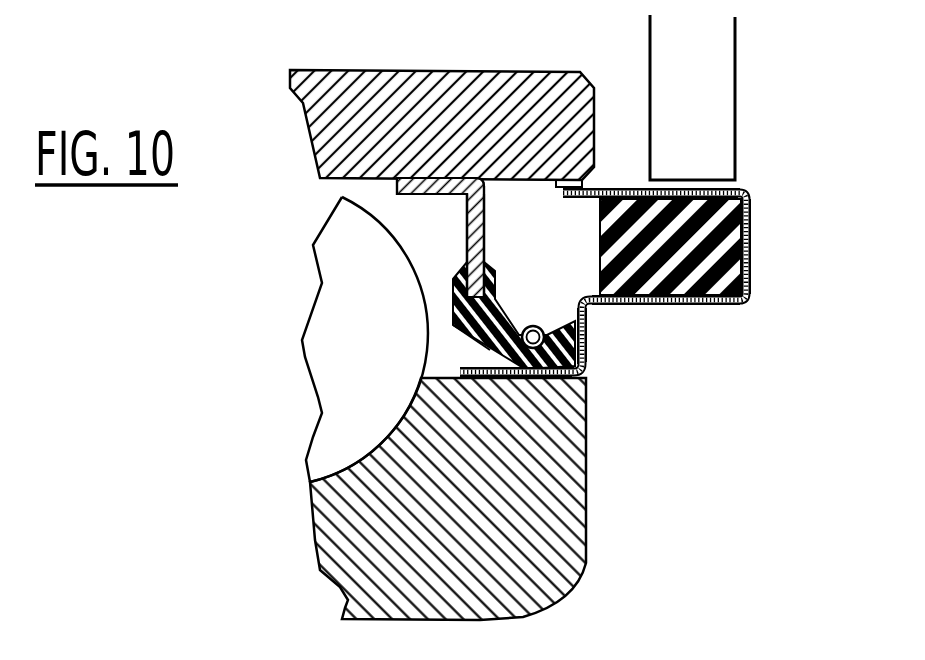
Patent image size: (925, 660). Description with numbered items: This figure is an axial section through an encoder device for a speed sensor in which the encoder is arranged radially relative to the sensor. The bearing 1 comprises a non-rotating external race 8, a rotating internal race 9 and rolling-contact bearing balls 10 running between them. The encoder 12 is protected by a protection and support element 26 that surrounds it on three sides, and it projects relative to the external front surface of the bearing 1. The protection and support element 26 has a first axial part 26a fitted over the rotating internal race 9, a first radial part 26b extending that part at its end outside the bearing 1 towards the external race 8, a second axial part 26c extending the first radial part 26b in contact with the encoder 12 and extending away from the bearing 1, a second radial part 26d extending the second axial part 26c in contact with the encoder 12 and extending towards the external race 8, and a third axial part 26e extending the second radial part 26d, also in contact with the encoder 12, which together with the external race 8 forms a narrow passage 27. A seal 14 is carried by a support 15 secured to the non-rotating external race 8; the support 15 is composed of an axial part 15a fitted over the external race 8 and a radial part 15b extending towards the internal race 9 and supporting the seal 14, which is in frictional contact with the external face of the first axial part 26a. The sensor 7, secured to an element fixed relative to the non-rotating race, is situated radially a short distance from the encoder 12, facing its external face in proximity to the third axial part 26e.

The bearing 1 is at (276, 399).
The sensor 7 is at (722, 56).
The non-rotating external race 8 is at (345, 102).
The rotating internal race 9 is at (553, 507).
The rolling-contact bearing balls 10 is at (330, 440).
The encoder 12 is at (710, 238).
The seal 14 is at (492, 345).
The support 15 is at (417, 170).
The axial part 15a is at (455, 178).
The radial part 15b is at (489, 203).
The protection and support element 26 is at (749, 321).
The first axial part 26a is at (548, 380).
The first radial part 26b is at (590, 330).
The second axial part 26c is at (683, 305).
The second radial part 26d is at (750, 266).
The third axial part 26e is at (693, 190).
The narrow passage 27 is at (553, 180).